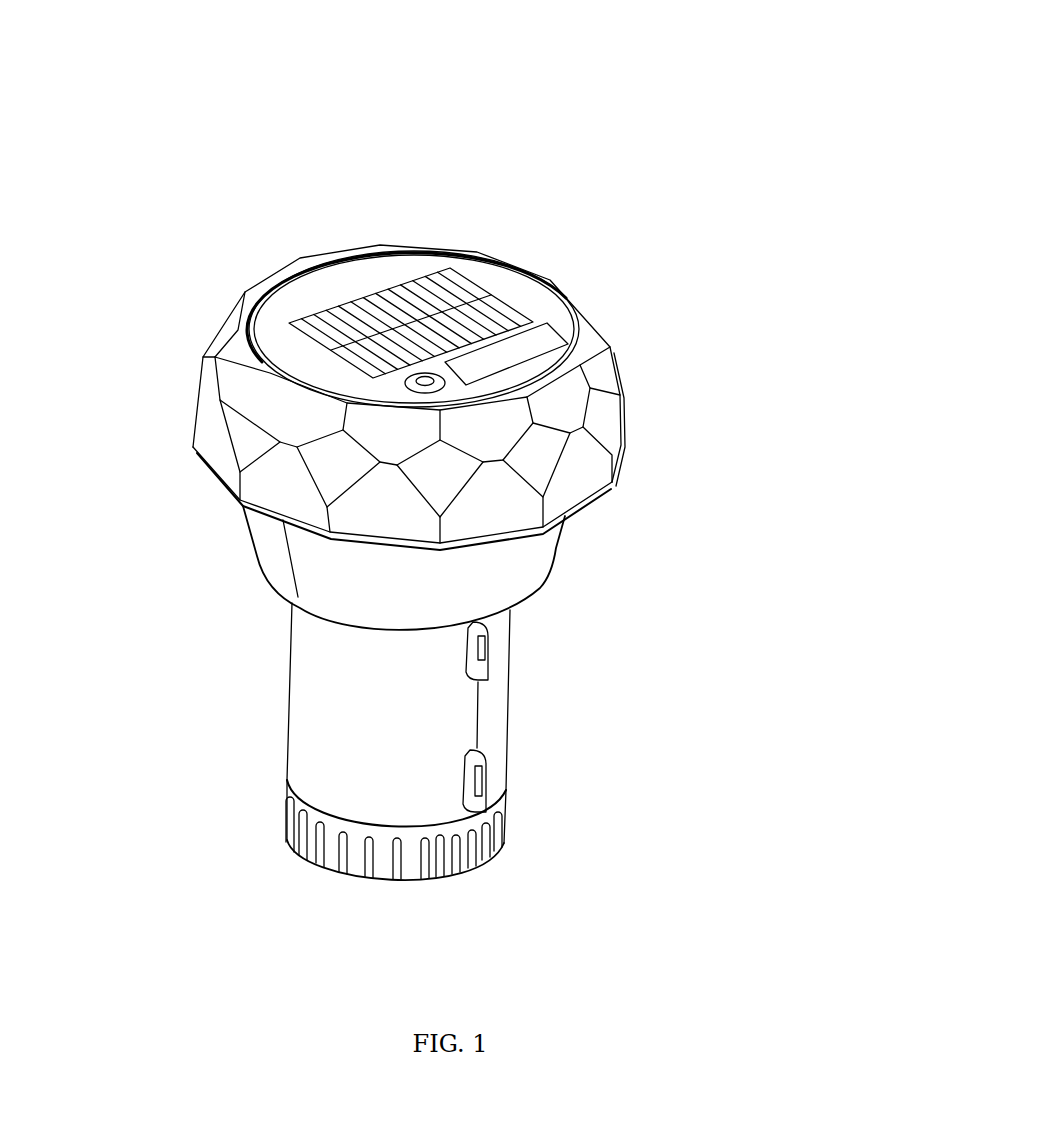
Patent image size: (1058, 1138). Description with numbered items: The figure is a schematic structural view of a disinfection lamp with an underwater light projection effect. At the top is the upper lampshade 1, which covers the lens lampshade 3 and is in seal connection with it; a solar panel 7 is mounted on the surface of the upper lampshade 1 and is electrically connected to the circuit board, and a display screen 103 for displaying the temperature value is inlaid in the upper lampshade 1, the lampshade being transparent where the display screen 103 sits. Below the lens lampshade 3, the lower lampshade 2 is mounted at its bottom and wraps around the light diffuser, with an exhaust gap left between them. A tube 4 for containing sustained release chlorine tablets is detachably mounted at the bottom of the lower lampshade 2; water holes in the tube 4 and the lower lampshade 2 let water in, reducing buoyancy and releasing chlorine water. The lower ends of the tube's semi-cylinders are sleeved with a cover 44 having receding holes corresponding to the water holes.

The upper lampshade 1 is at (450, 499).
The lower lampshade 2 is at (528, 562).
The lens lampshade 3 is at (395, 282).
The tube 4 is at (322, 715).
The solar panel 7 is at (437, 256).
The cover 44 is at (299, 863).
The display screen 103 is at (511, 332).